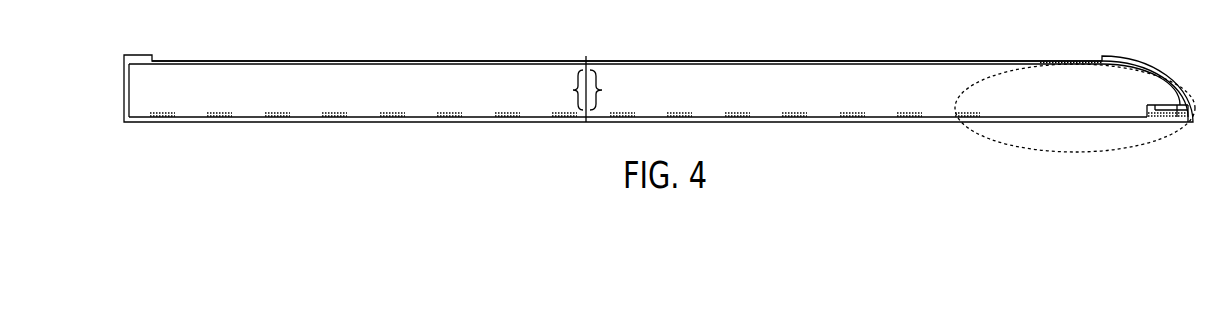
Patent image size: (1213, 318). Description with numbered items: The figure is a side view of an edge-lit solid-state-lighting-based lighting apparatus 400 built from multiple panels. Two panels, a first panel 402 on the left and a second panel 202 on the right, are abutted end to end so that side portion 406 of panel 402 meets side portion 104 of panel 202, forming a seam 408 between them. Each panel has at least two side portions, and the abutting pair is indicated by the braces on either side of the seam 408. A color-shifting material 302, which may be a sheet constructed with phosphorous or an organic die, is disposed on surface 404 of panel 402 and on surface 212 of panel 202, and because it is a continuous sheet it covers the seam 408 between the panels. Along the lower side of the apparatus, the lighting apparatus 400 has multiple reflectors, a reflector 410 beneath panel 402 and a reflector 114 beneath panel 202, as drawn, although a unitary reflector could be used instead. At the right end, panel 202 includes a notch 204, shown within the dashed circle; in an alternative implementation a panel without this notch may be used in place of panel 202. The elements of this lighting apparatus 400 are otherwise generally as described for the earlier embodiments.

The lighting apparatus 400 is at (470, 25).
The panel 402 is at (372, 98).
The surface 404 is at (318, 61).
The reflector 410 is at (396, 122).
The seam 408 is at (586, 61).
The side portion 406 is at (561, 90).
The side portion 104 is at (611, 90).
The panel 202 is at (809, 96).
The color-shifting material 302 is at (745, 61).
The surface 212 is at (867, 61).
The reflector 114 is at (845, 122).
The notch 204 is at (1150, 108).